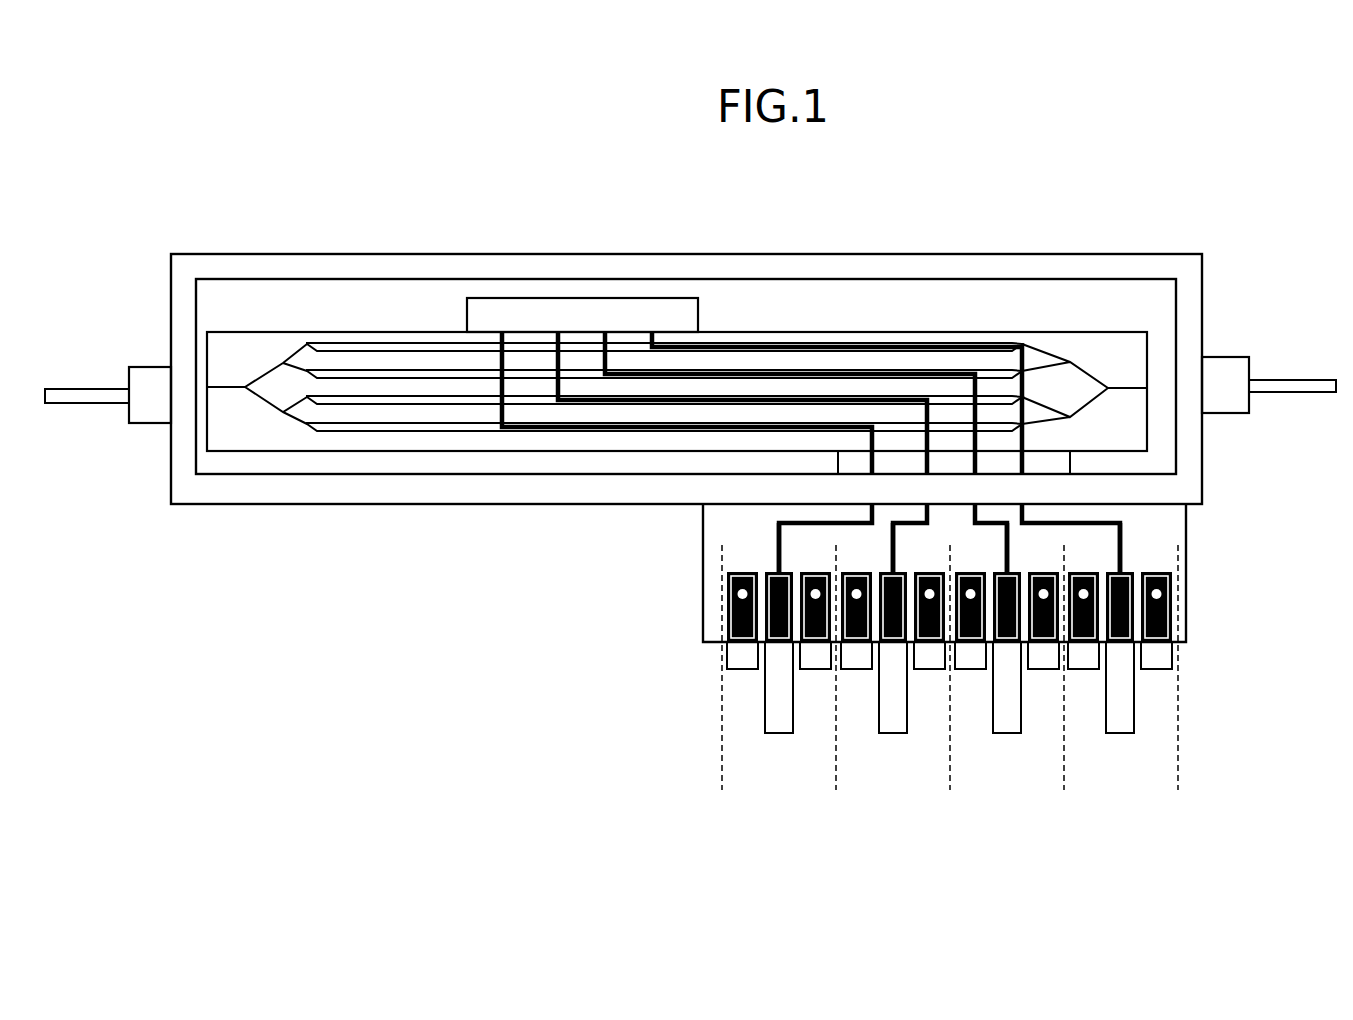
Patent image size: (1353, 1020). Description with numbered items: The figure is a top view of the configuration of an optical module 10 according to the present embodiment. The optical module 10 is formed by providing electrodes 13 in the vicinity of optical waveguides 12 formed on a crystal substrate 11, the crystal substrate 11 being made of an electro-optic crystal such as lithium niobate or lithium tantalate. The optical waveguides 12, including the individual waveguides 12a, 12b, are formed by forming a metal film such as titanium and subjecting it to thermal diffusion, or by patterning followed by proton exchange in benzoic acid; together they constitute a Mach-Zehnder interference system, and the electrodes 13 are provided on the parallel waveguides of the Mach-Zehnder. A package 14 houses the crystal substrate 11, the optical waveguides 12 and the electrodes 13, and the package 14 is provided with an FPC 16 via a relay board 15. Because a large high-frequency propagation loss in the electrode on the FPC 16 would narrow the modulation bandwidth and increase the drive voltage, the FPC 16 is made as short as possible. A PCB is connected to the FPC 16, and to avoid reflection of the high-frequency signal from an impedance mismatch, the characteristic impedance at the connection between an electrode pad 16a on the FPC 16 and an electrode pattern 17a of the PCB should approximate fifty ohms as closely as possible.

The optical module 10 is at (920, 253).
The crystal substrate 11 is at (1130, 437).
The optical waveguide 12 is at (1118, 386).
The optical waveguide 12a is at (349, 343).
The optical waveguide 12b is at (395, 352).
The electrode 13 is at (600, 360).
The package 14 is at (1177, 300).
The relay board 15 is at (1057, 460).
The FPC 16 is at (703, 558).
The electrode pad 16a is at (1120, 598).
The electrode pattern 17a is at (1135, 703).